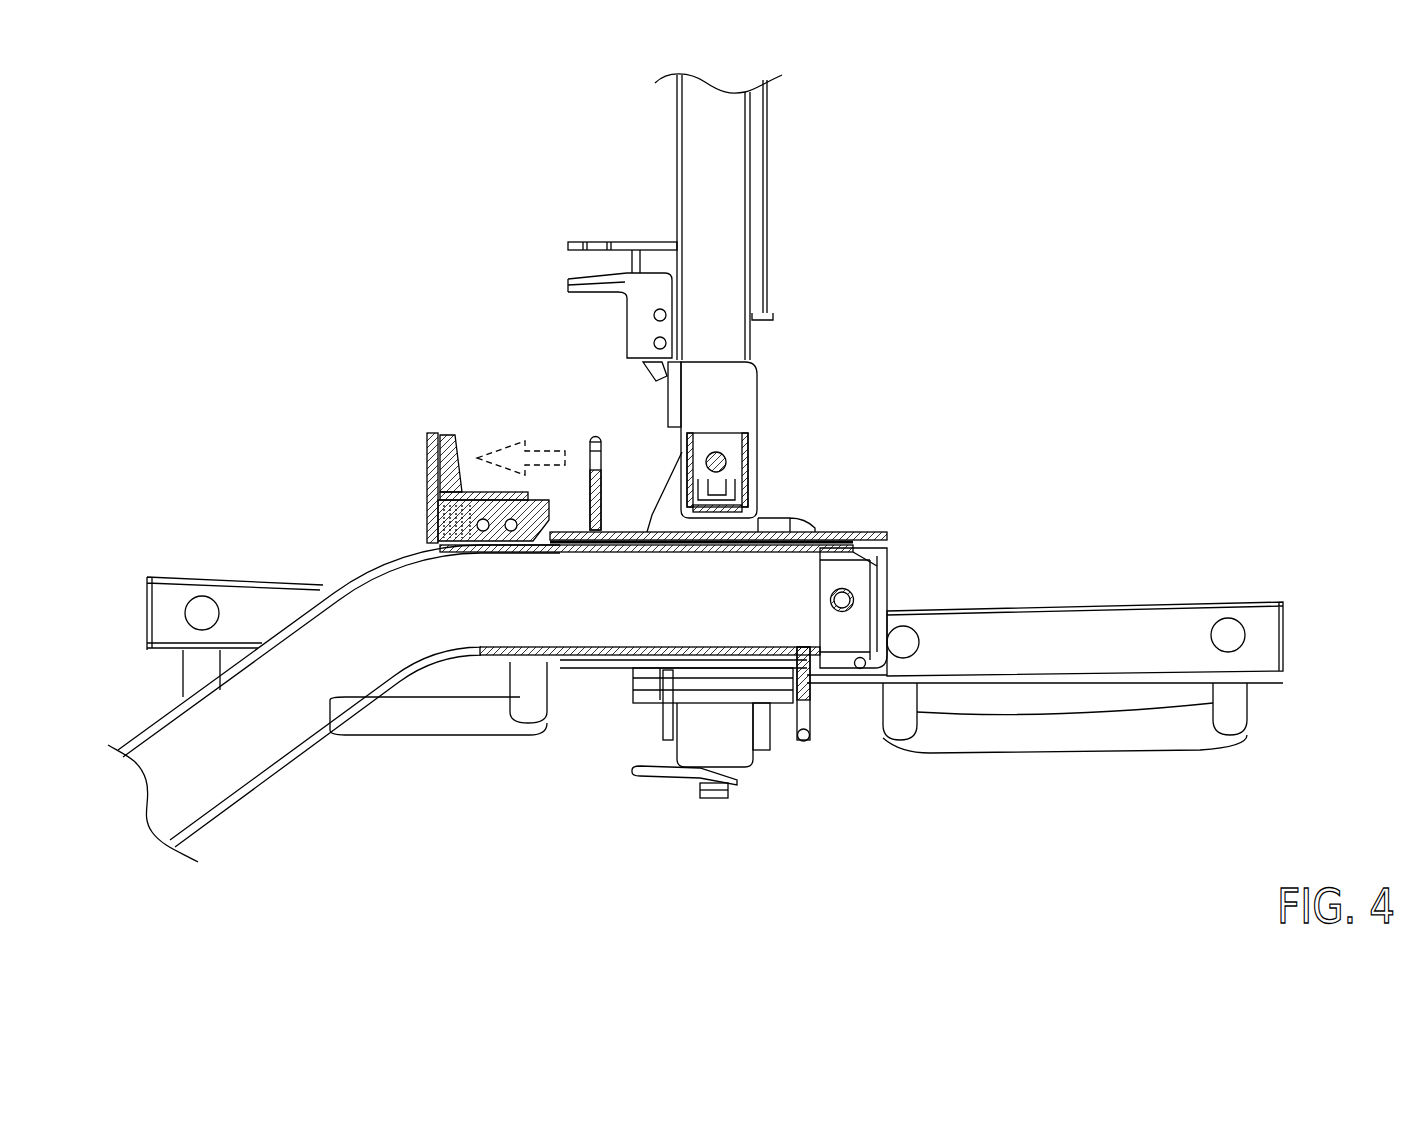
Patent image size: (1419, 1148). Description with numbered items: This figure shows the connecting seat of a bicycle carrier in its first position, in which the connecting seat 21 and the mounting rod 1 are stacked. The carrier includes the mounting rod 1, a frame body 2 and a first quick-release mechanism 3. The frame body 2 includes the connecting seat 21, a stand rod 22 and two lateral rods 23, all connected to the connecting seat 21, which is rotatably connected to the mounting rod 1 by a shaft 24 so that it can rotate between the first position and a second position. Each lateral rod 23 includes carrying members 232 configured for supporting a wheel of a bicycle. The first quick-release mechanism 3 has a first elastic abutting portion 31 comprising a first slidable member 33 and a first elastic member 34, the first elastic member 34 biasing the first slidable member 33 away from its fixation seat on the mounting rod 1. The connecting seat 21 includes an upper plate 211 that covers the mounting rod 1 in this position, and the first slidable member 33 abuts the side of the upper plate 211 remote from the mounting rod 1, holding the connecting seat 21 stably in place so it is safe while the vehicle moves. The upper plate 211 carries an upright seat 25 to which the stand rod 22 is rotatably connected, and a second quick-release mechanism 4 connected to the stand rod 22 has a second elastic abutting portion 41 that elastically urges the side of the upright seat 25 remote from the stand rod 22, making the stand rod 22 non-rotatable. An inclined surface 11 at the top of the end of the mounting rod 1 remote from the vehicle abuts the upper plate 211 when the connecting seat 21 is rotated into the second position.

The mounting rod 1 is at (313, 742).
The frame body 2 is at (1033, 298).
The first quick-release mechanism 3 is at (399, 393).
The second quick-release mechanism 4 is at (668, 308).
The inclined surface 11 is at (890, 552).
The connecting seat 21 is at (630, 512).
The stand rod 22 is at (727, 127).
The lateral rods 23 is at (693, 743).
The shaft 24 is at (840, 606).
The upright seat 25 is at (743, 407).
The first elastic abutting portion 31 is at (391, 492).
The first slidable member 33 is at (430, 514).
The first elastic member 34 is at (455, 528).
The second elastic abutting portion 41 is at (657, 365).
The upper plate 211 is at (848, 537).
The carrying members 232 is at (433, 722).